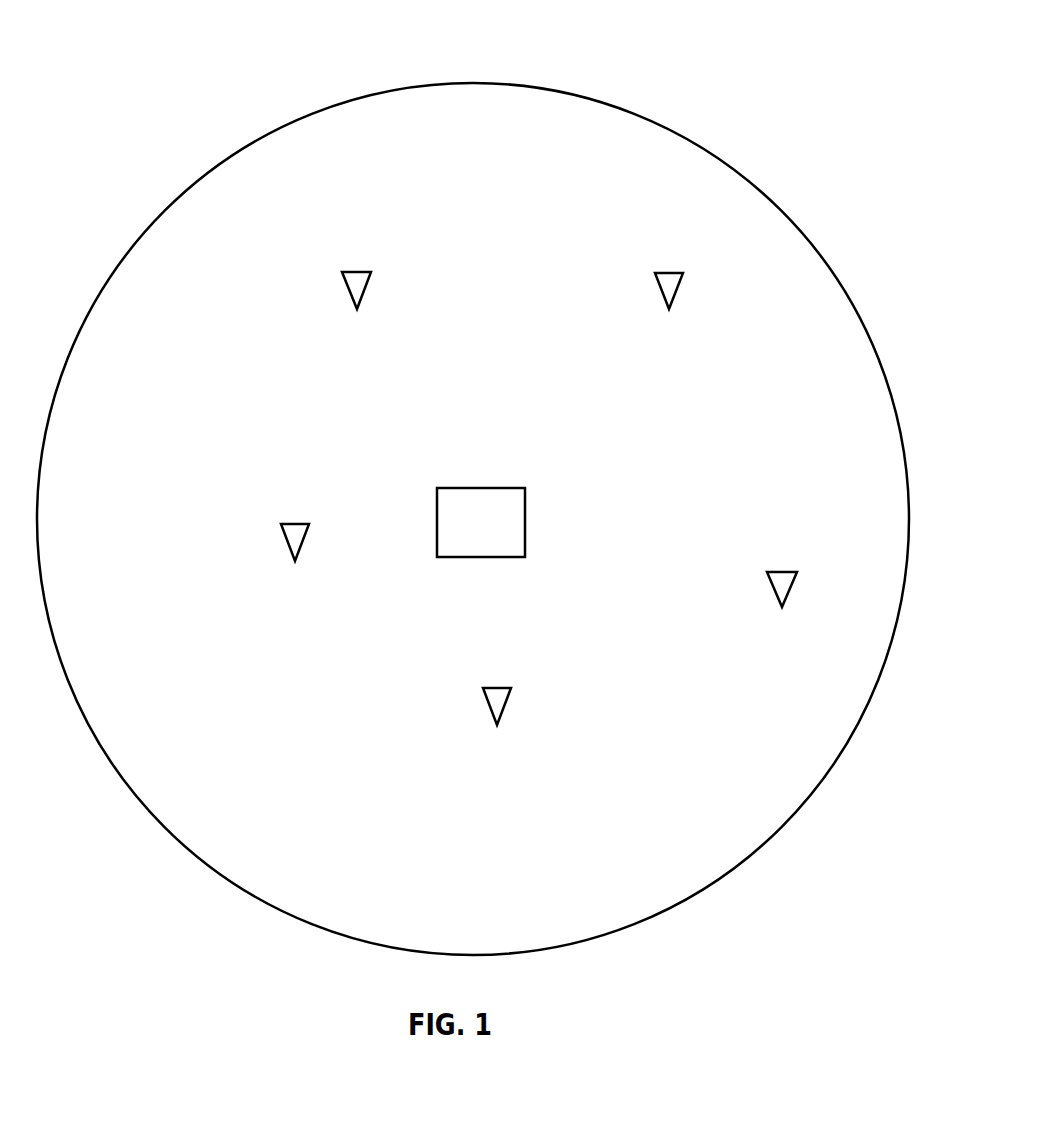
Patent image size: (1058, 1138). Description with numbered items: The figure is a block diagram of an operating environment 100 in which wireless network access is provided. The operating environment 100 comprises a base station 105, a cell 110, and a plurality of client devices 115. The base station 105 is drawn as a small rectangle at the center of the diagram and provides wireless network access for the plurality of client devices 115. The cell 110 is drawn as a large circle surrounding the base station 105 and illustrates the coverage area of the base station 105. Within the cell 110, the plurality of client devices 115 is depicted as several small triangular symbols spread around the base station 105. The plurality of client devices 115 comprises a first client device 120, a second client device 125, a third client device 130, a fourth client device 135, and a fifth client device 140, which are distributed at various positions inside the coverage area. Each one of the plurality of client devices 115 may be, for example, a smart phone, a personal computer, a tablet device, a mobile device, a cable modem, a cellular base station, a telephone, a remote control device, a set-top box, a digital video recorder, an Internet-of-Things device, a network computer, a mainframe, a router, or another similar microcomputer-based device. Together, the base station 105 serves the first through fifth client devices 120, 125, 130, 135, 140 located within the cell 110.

The operating environment 100 is at (753, 54).
The base station 105 is at (494, 488).
The cell 110 is at (757, 185).
The plurality of client devices 115 is at (455, 212).
The first client device 120 is at (294, 539).
The second client device 125 is at (496, 702).
The third client device 130 is at (781, 585).
The fourth client device 135 is at (668, 287).
The fifth client device 140 is at (356, 287).